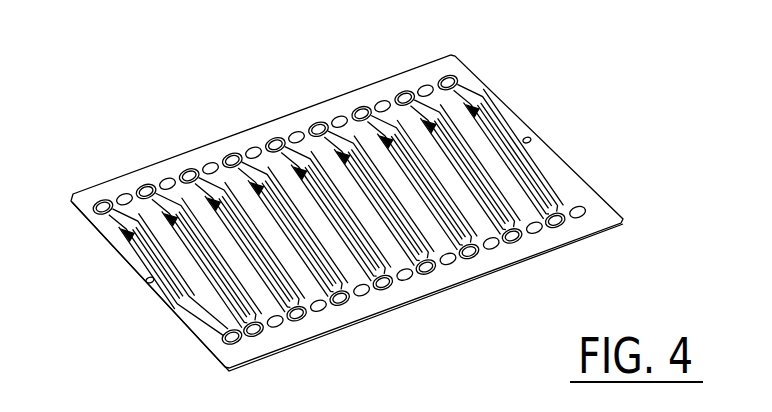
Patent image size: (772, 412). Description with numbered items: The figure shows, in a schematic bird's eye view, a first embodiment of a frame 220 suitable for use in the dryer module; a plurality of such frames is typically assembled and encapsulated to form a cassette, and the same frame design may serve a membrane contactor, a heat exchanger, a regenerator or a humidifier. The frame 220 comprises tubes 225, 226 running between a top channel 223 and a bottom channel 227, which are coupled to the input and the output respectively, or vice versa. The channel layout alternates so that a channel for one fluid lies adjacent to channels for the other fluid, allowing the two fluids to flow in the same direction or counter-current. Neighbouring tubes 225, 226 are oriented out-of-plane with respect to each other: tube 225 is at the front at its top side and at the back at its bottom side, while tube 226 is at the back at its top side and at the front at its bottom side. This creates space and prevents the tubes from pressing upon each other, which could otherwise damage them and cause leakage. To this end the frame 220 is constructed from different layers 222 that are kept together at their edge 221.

The frame 220 is at (547, 96).
The edge 221 is at (155, 175).
The layers 222 is at (290, 152).
The top channel 223 is at (424, 92).
The tube 225 is at (207, 287).
The tube 226 is at (163, 228).
The bottom channel 227 is at (487, 241).